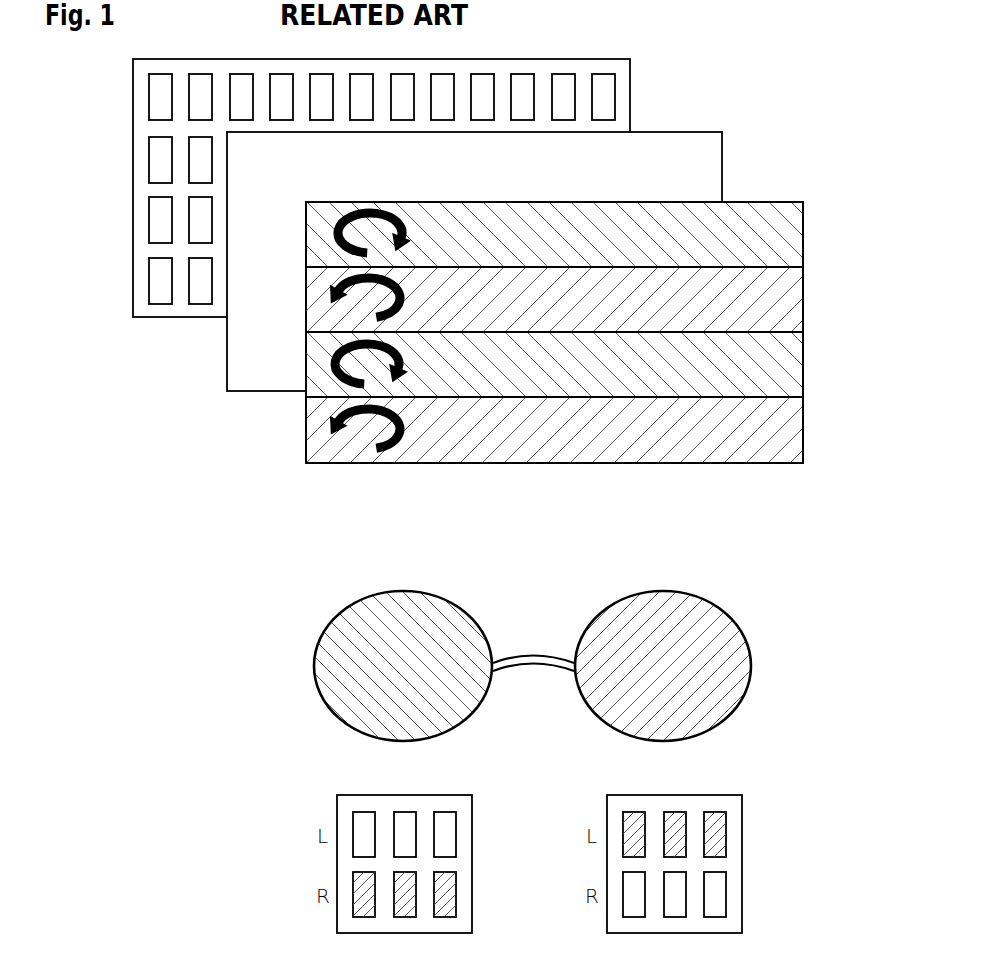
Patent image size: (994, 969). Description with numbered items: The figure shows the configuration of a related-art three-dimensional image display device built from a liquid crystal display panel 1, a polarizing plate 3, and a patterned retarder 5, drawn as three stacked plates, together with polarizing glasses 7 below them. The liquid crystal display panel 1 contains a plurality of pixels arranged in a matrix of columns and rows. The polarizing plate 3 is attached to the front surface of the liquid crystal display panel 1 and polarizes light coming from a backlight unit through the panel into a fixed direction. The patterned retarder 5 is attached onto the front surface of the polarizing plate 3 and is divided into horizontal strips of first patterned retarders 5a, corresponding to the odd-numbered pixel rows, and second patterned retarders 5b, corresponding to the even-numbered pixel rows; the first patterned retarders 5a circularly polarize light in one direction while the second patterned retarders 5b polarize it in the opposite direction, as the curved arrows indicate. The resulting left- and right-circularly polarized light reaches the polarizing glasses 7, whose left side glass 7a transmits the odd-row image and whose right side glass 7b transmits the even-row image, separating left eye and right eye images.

The liquid crystal display panel 1 is at (625, 79).
The polarizing plate 3 is at (715, 163).
The patterned retarder 5 is at (555, 298).
The first patterned retarders 5a is at (800, 236).
The second patterned retarders 5b is at (800, 303).
The polarizing glasses 7 is at (531, 628).
The left side glass 7a is at (465, 626).
The right side glass 7b is at (492, 557).